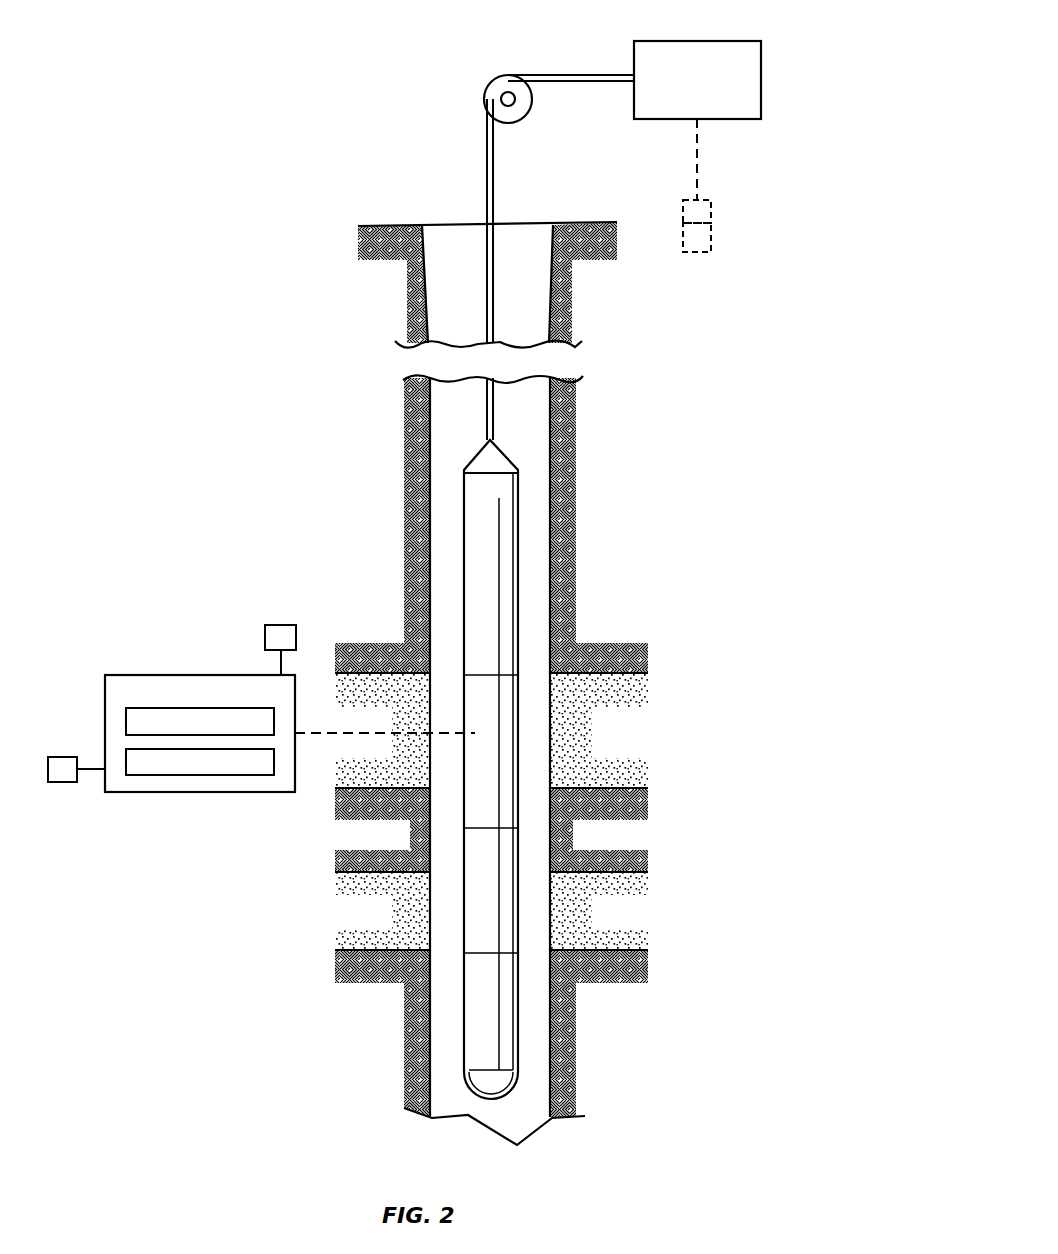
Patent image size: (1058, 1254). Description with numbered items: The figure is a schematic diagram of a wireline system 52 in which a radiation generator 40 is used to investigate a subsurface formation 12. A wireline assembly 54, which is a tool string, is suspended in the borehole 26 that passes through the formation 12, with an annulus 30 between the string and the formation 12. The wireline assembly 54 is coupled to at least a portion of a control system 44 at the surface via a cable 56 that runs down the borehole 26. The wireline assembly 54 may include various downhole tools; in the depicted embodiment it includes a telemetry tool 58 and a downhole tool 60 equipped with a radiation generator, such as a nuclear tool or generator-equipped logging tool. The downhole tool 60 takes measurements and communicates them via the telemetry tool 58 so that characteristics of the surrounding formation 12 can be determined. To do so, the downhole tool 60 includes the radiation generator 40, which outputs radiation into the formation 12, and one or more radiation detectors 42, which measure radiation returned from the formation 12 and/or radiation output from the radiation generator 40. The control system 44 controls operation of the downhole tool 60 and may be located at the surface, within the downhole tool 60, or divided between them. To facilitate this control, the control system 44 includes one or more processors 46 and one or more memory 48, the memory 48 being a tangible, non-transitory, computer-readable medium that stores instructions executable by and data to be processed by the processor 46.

The subsurface formation 12 is at (720, 682).
The borehole 26 is at (428, 430).
The annulus 30 is at (524, 243).
The radiation generator 40 is at (265, 638).
The radiation detector 42 is at (63, 782).
The control system 44 is at (740, 41).
The processor 46 is at (712, 210).
The memory 48 is at (712, 240).
The wireline system 52 is at (409, 64).
The wireline assembly 54 is at (520, 520).
The cable 56 is at (483, 243).
The telemetry tool 58 is at (518, 605).
The downhole tool 60 is at (518, 807).